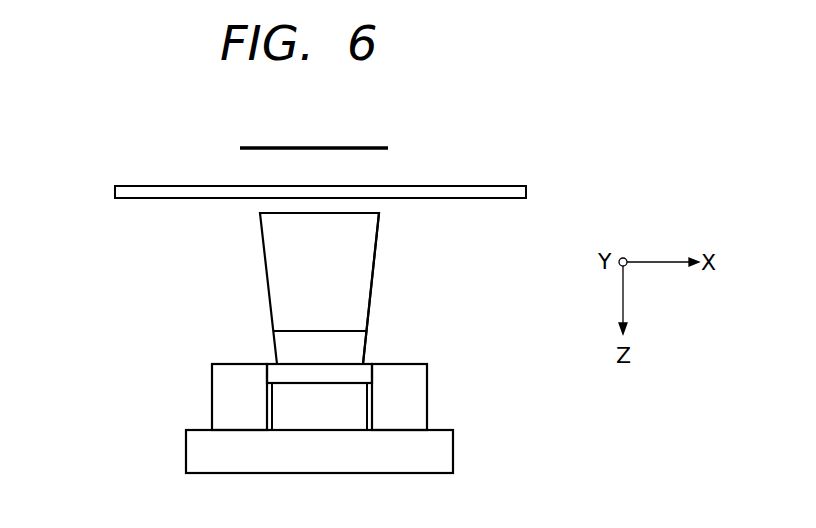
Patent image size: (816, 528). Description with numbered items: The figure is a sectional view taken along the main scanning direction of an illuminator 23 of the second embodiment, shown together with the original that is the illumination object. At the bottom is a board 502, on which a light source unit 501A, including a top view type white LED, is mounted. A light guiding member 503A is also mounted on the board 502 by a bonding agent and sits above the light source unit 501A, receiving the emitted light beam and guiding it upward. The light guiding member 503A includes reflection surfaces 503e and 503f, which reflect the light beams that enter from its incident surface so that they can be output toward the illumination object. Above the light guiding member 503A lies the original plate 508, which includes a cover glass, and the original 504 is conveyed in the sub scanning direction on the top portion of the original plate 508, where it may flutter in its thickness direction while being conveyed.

The illuminator 23 is at (120, 270).
The original 504 is at (368, 148).
The original plate 508 is at (526, 192).
The reflection surface 503e is at (267, 258).
The reflection surface 503f is at (371, 263).
The light guiding member 503A is at (420, 378).
The light source unit 501A is at (357, 410).
The board 502 is at (198, 445).